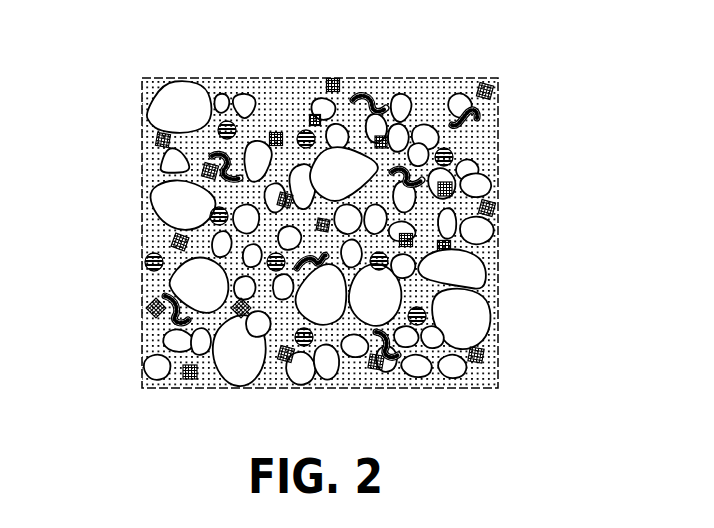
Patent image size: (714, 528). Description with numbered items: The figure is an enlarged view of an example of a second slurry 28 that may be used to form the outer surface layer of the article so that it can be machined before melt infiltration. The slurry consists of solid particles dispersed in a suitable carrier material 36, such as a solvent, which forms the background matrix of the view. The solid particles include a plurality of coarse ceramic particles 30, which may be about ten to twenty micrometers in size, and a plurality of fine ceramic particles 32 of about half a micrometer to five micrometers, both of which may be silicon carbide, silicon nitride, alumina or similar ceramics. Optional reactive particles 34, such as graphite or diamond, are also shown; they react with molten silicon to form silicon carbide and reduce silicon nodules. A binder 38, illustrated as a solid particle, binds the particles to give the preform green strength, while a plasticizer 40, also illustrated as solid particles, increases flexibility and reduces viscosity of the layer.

The second slurry 28 is at (283, 80).
The coarse ceramic particles 30 is at (487, 298).
The fine ceramic particles 32 is at (462, 107).
The reactive particles 34 is at (333, 78).
The carrier material 36 is at (152, 342).
The binder 38 is at (145, 267).
The plasticizer 40 is at (475, 116).